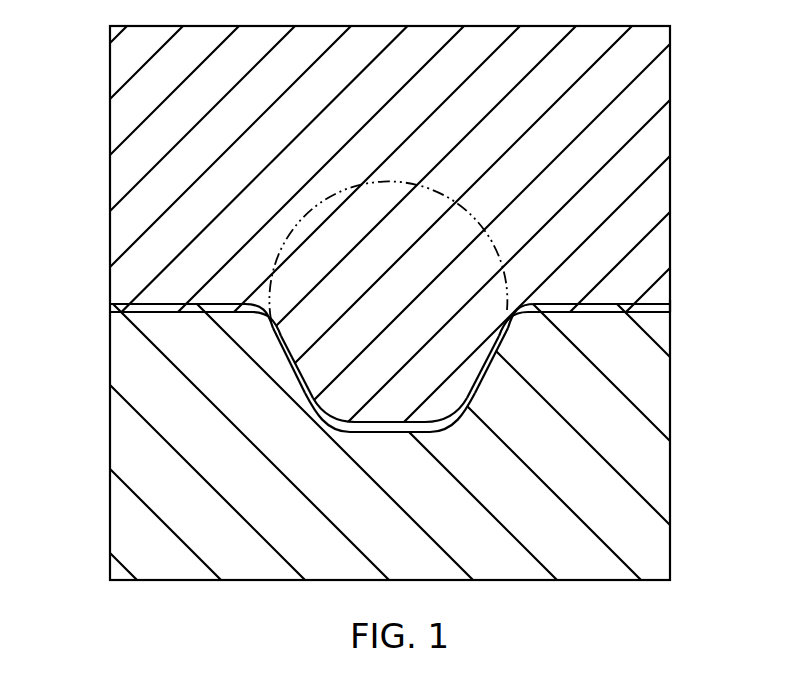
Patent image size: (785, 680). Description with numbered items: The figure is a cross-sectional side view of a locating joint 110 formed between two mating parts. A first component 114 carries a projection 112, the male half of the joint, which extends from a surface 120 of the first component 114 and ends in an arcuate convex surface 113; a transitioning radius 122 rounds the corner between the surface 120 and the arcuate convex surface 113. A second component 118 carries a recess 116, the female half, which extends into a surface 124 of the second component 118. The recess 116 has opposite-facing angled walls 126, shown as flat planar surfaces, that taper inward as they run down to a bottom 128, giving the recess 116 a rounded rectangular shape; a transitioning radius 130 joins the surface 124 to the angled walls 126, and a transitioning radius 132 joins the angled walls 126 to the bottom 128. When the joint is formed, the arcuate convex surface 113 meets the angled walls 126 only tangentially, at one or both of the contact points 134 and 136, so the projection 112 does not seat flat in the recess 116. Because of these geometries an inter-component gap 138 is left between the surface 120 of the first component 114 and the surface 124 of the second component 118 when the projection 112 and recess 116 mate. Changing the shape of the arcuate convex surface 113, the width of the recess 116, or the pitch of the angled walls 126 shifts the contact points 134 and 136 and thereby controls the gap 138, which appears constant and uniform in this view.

The locating joint 110 is at (64, 83).
The projection 112 is at (475, 317).
The arcuate convex surface 113 is at (325, 426).
The first component 114 is at (663, 132).
The recess 116 is at (462, 438).
The second component 118 is at (667, 402).
The surface 120 is at (600, 303).
The transitioning radius 122 is at (512, 303).
The surface 124 is at (172, 317).
The opposite-facing angled walls 126 is at (276, 340).
The bottom 128 is at (388, 436).
The transitioning radius 130 is at (530, 315).
The transitioning radius 132 is at (455, 423).
The contact point 134 is at (293, 380).
The contact point 136 is at (502, 357).
The inter-component gap 138 is at (678, 301).